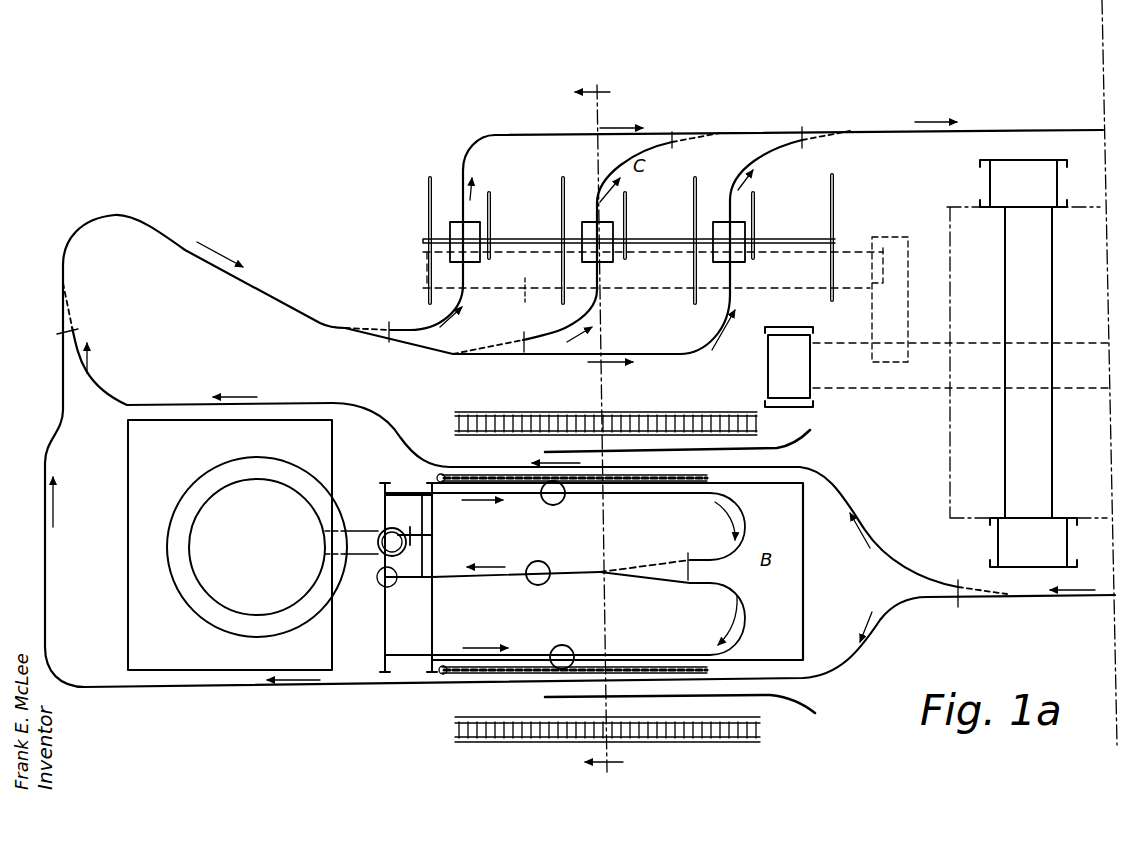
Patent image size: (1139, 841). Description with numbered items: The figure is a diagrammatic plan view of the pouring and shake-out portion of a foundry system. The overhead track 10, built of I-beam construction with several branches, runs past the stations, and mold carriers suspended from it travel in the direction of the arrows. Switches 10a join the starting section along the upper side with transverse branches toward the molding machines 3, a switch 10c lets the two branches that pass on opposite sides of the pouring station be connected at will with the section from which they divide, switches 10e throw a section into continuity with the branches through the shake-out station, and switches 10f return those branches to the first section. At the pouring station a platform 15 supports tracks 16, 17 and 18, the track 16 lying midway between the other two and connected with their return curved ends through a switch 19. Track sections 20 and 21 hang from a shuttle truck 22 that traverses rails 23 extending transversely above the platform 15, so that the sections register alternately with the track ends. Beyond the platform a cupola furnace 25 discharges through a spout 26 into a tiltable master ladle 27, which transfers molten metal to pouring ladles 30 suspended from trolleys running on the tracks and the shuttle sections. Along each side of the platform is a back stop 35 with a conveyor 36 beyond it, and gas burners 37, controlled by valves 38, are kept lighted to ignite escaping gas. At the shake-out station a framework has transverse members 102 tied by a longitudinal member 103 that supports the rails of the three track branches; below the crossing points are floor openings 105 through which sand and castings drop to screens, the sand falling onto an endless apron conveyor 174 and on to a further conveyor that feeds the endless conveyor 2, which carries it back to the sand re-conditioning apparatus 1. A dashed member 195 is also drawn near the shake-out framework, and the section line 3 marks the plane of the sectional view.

The sand re-conditioning apparatus 1 is at (950, 448).
The endless conveyor 2 is at (858, 388).
The molding machines 3 is at (599, 432).
The overhead track 10 is at (290, 300).
The switches 10a is at (63, 308).
The switch 10c is at (985, 600).
The switches 10e is at (368, 340).
The switches 10f is at (692, 130).
The platform 15 is at (797, 590).
The track 16 is at (575, 572).
The track 17 is at (613, 657).
The track 18 is at (613, 493).
The switch 19 is at (647, 580).
The track section 20 is at (418, 580).
The track section 21 is at (402, 497).
The shuttle truck 22 is at (423, 535).
The rails 23 is at (432, 643).
The cupola furnace 25 is at (237, 545).
The spout 26 is at (362, 562).
The master ladle 27 is at (382, 530).
The pouring ladles 30 is at (382, 586).
The back stop 35 is at (790, 446).
The conveyor 36 is at (560, 413).
The gas burners 37 is at (498, 477).
The valves 38 is at (437, 477).
The transverse members 102 is at (428, 213).
The longitudinal member 103 is at (792, 233).
The openings 105 is at (473, 230).
The endless apron conveyor 174 is at (653, 287).
The bracket 195 is at (905, 300).